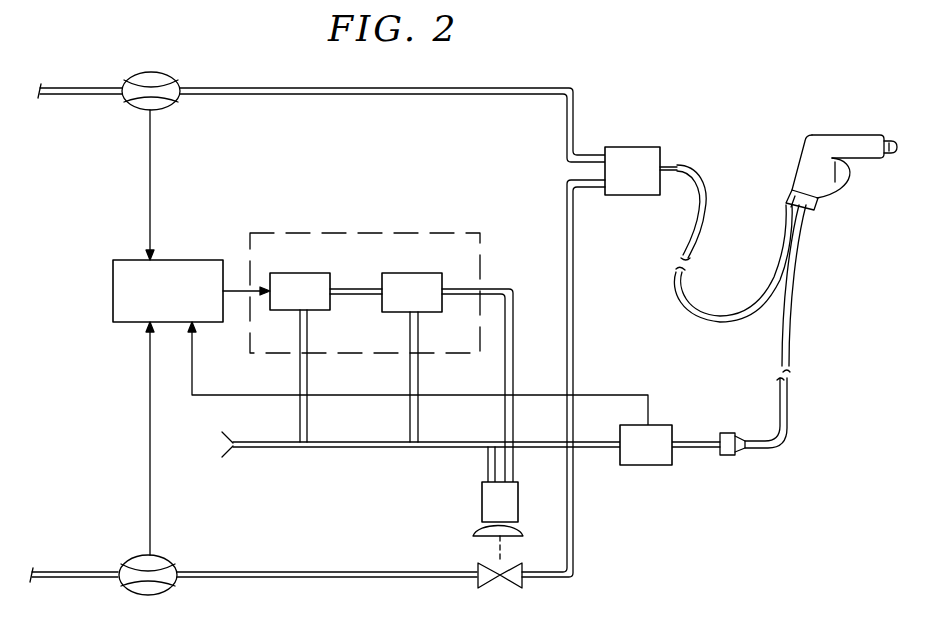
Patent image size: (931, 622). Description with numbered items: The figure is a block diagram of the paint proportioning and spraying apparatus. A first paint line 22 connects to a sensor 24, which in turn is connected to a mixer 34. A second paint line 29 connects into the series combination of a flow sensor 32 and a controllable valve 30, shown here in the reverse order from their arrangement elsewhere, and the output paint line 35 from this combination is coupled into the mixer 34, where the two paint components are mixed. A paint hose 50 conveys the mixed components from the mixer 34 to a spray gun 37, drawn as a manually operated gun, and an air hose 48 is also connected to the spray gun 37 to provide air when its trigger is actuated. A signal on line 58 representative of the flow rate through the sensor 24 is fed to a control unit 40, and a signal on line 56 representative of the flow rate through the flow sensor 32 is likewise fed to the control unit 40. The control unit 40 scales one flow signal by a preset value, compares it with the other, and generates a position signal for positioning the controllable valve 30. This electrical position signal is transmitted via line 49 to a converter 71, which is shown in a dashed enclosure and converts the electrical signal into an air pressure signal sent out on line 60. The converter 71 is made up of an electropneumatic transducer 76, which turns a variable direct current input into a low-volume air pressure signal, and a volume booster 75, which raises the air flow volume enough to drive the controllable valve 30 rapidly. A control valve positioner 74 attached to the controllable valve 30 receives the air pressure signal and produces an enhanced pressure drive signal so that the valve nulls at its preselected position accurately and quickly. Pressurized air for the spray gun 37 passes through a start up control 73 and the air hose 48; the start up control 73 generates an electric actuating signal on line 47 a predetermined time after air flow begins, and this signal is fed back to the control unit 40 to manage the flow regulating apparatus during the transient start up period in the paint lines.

The paint line 22 is at (66, 90).
The sensor 24 is at (178, 76).
The line 58 is at (151, 165).
The control unit 40 is at (168, 291).
The line 49 is at (238, 290).
The converter 71 is at (367, 233).
The electropneumatic transducer 76 is at (326, 291).
The volume booster 75 is at (412, 292).
The line 60 is at (505, 290).
The mixer 34 is at (655, 147).
The spray gun 37 is at (842, 135).
The paint hose 50 is at (704, 215).
The air hose 48 is at (788, 340).
The line 47 is at (600, 395).
The start up control 73 is at (660, 465).
The control valve positioner 74 is at (482, 497).
The controllable valve 30 is at (478, 528).
The line 56 is at (148, 438).
The paint line 29 is at (90, 573).
The flow sensor 32 is at (166, 558).
The output paint line 35 is at (575, 545).